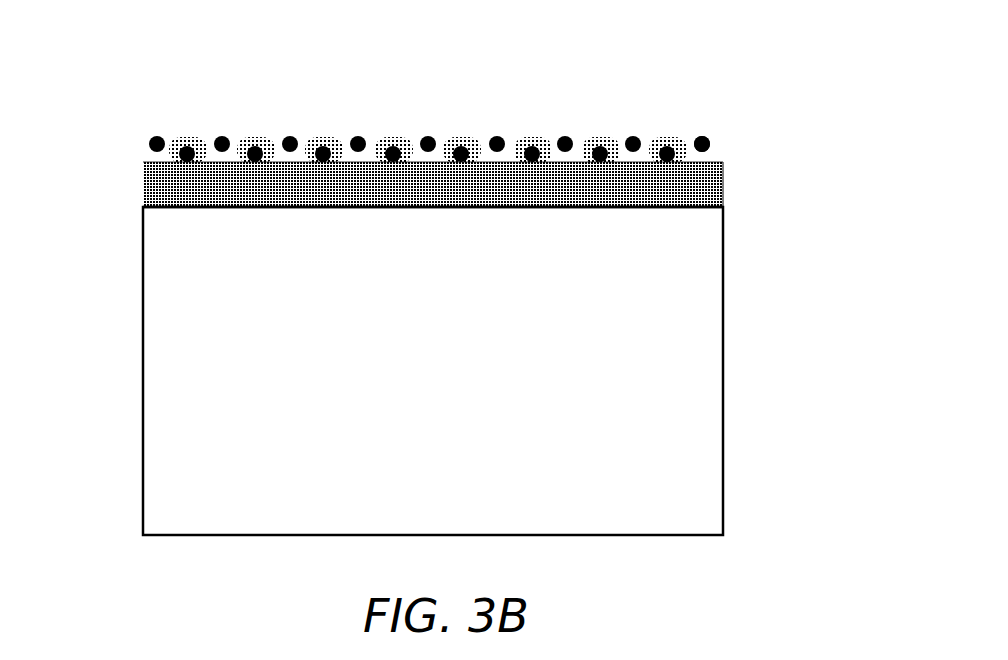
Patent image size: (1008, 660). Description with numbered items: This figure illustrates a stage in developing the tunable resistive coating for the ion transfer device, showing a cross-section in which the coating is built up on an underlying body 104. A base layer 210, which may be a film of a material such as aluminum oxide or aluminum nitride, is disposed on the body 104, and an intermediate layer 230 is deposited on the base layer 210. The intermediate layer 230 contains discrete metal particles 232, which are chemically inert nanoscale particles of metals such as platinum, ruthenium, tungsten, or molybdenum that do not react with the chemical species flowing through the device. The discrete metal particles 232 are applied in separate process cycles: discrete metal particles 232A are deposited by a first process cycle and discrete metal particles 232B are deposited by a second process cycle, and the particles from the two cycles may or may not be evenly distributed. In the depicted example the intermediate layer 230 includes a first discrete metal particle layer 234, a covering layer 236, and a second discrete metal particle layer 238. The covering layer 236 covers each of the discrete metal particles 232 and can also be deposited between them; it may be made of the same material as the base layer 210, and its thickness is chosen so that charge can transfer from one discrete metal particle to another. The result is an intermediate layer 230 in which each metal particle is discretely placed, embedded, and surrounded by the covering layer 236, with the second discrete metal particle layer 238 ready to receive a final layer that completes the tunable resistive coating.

The substrate 104 is at (455, 384).
The base layer 210 is at (140, 165).
The intermediate layer 230 is at (137, 128).
The discrete metal particles 232 is at (226, 134).
The discrete metal particles 232A is at (600, 160).
The discrete metal particles 232B is at (532, 160).
The first discrete metal particle layer 234 is at (723, 165).
The covering layer 236 is at (738, 155).
The second discrete metal particle layer 238 is at (725, 139).